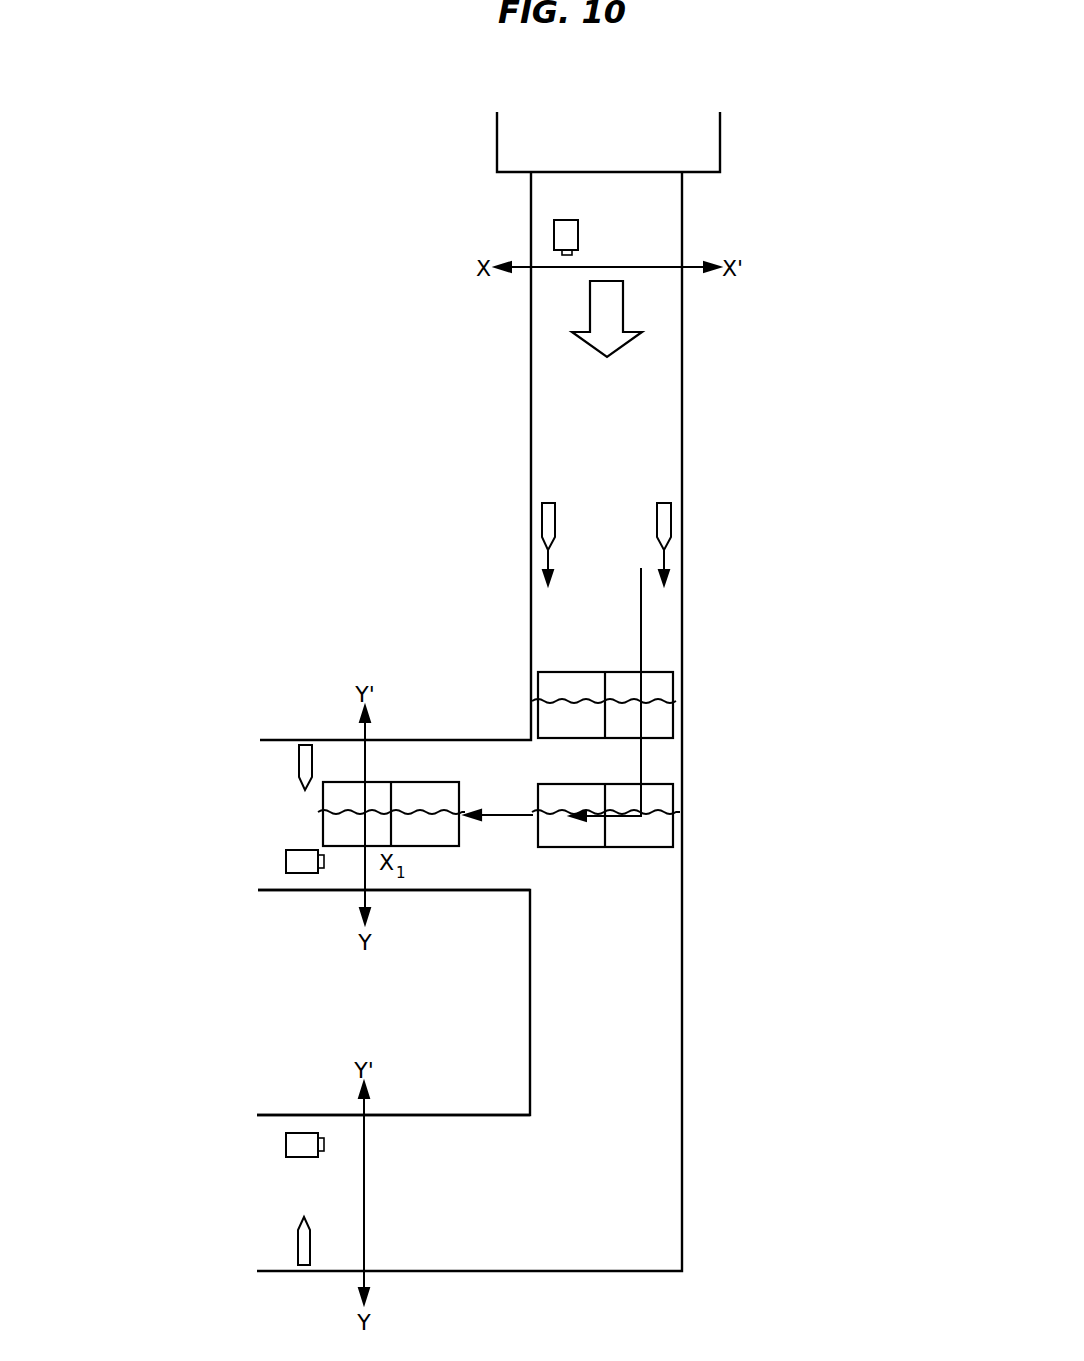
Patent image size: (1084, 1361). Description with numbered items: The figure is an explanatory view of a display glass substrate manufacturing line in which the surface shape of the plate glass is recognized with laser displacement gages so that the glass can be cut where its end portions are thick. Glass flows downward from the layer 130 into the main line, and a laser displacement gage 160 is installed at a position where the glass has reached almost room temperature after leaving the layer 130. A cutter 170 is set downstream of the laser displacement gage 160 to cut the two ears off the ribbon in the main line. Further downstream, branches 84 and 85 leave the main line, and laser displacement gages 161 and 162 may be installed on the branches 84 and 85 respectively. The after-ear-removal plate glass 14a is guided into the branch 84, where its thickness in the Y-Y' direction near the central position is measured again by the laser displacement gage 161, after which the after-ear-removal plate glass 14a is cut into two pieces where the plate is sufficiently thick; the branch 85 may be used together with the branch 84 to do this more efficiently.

The layer 130 is at (720, 142).
The laser displacement gage 160 is at (554, 235).
The laser displacement gage 161 is at (286, 863).
The laser displacement gage 162 is at (286, 1146).
The cutter 170 is at (671, 520).
The after-ear-removal plate glass 14a is at (673, 690).
The branch 84 is at (437, 892).
The branch 85 is at (432, 1113).